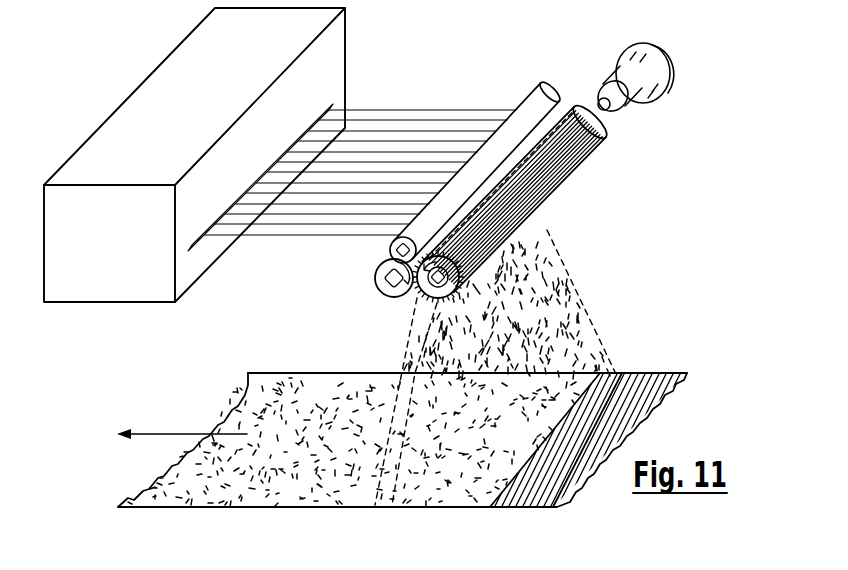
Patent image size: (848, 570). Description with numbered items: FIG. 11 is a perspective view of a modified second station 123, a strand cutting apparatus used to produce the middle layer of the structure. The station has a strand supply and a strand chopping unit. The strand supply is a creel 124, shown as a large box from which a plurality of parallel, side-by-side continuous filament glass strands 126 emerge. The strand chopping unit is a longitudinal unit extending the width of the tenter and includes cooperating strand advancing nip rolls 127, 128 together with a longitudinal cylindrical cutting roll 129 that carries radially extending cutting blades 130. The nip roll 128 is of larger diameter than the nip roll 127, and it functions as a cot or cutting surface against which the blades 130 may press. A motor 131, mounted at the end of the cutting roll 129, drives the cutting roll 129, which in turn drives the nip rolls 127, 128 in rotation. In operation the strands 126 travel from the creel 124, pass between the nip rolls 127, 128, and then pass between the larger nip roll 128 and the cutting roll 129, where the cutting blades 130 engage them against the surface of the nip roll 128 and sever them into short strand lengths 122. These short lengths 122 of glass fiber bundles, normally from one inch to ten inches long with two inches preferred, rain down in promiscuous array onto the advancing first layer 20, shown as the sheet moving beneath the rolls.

The first layer 20 is at (657, 366).
The short strand lengths 122 is at (588, 318).
The second station 123 is at (600, 220).
The creel 124 is at (181, 70).
The strands 126 is at (393, 182).
The nip roll 127 is at (556, 92).
The nip roll 128 is at (375, 275).
The cutting roll 129 is at (590, 153).
The cutting blades 130 is at (609, 135).
The motor 131 is at (620, 53).